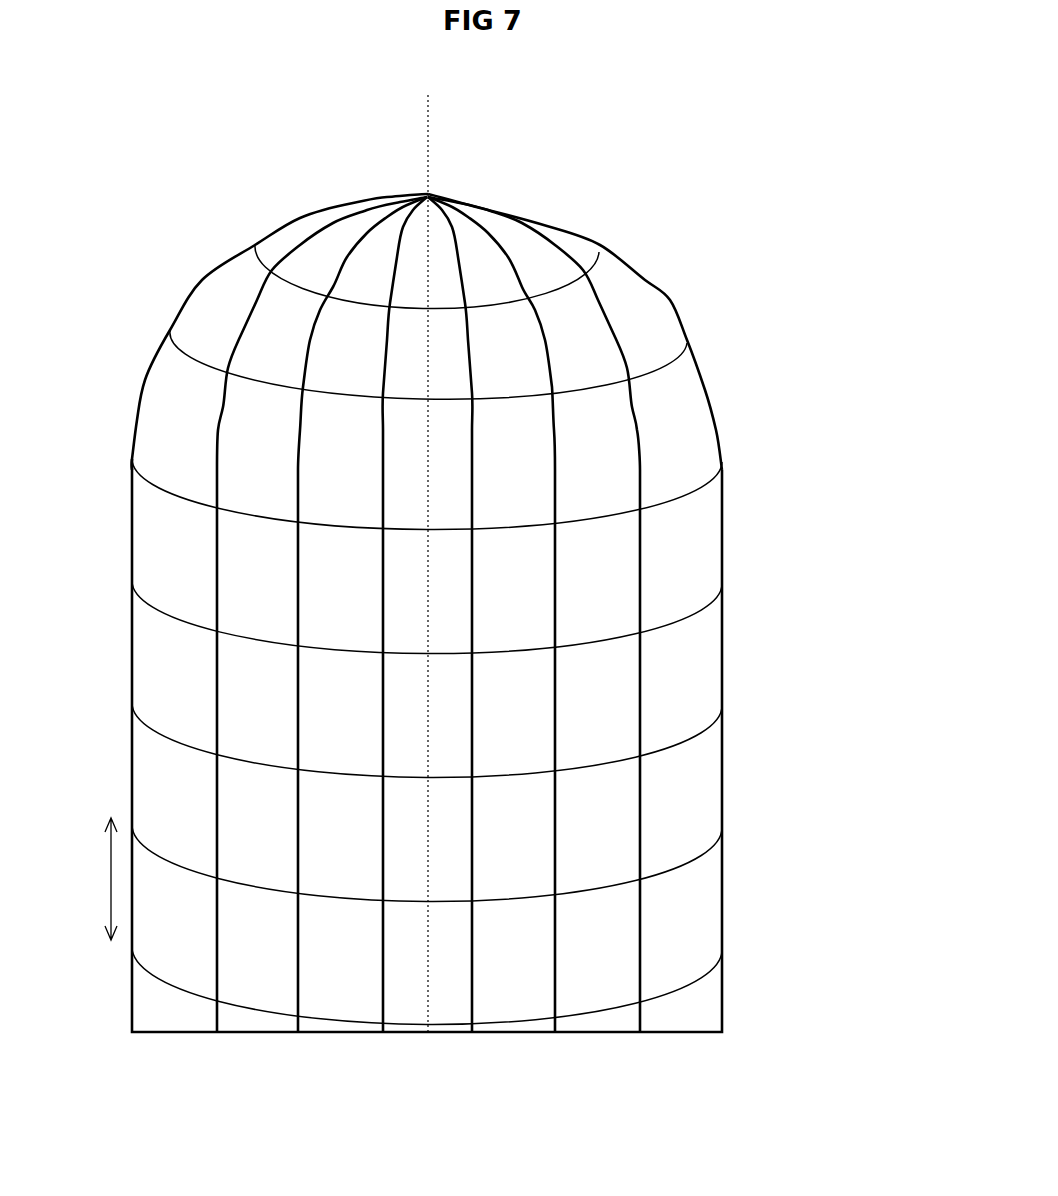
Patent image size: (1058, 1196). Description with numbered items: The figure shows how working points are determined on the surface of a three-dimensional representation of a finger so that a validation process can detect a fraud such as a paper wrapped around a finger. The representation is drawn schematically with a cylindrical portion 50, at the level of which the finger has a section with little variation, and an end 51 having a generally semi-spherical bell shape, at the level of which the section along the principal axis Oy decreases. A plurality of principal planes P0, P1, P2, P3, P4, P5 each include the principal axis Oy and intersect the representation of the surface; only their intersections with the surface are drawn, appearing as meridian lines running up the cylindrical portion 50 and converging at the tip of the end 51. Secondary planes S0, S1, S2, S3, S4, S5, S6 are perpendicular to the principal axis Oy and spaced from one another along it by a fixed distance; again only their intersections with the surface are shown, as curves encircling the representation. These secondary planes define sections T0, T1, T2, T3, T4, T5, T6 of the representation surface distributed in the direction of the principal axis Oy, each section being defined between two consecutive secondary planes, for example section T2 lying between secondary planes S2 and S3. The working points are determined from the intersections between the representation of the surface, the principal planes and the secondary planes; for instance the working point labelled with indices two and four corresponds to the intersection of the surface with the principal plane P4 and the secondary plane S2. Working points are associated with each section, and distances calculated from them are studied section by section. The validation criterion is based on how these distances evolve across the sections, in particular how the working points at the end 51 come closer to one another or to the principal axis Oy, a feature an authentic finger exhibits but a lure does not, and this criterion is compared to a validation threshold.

The cylindrical portion 50 is at (518, 737).
The end 51 is at (518, 326).
The secondary plane S0 is at (705, 974).
The secondary plane S1 is at (705, 852).
The secondary plane S2 is at (705, 729).
The secondary plane S3 is at (705, 607).
The secondary plane S4 is at (705, 484).
The secondary plane S5 is at (687, 346).
The secondary plane S6 is at (599, 252).
The section T0 is at (741, 906).
The section T1 is at (743, 779).
The section T2 is at (741, 659).
The section T3 is at (773, 516).
The section T4 is at (739, 413).
The section T5 is at (682, 283).
The section T6 is at (597, 221).
The principal plane P0 is at (305, 240).
The principal plane P1 is at (353, 228).
The principal plane P2 is at (403, 227).
The principal plane P3 is at (458, 226).
The principal plane P4 is at (495, 240).
The principal plane P5 is at (537, 237).
The principal axis Oy is at (422, 104).